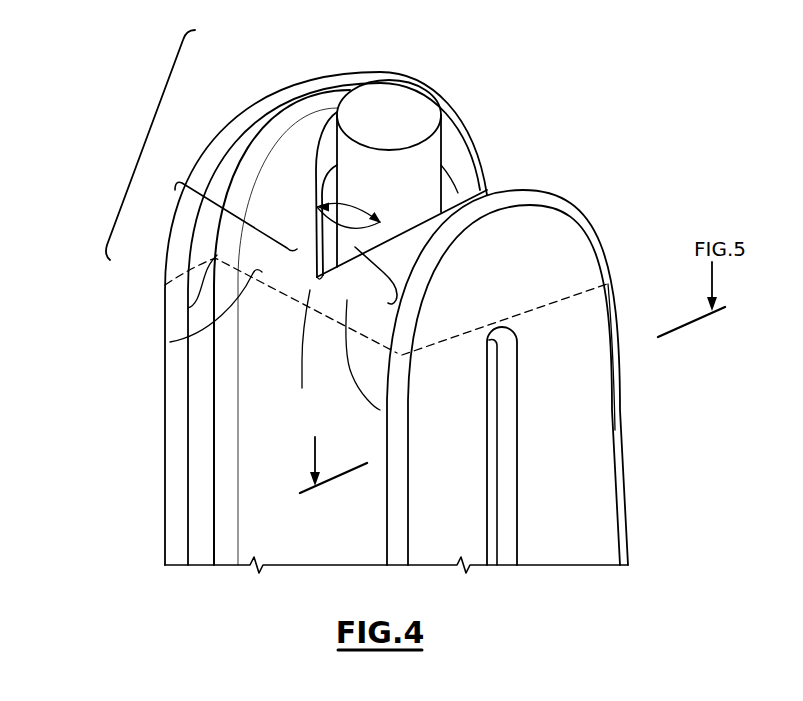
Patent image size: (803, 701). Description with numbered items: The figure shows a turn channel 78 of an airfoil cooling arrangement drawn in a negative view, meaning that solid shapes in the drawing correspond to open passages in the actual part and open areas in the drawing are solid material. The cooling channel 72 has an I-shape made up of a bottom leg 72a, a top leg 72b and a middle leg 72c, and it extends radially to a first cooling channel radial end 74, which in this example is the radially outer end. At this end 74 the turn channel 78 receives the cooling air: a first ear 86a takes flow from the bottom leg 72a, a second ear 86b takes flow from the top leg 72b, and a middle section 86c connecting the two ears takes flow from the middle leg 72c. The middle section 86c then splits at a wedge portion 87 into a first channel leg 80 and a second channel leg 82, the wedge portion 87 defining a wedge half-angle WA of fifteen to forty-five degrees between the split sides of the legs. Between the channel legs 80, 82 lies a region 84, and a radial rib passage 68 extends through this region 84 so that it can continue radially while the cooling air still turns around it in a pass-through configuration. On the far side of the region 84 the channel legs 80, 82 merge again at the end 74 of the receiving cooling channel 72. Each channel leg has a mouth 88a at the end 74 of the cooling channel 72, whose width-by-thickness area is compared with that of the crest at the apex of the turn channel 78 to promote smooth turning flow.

The rib passage 68 is at (490, 373).
The cooling channel 72 is at (258, 473).
The bottom leg 72a is at (608, 499).
The top leg 72b is at (177, 458).
The middle leg 72c is at (273, 528).
The first cooling channel radial end 74 is at (170, 342).
The turn channel 78 is at (140, 142).
The first channel leg 80 is at (388, 275).
The second channel leg 82 is at (232, 222).
The region 84 is at (318, 160).
The first ear 86a is at (403, 322).
The second ear 86b is at (177, 247).
The middle section 86c is at (302, 388).
The wedge portion 87 is at (328, 292).
The mouth 88a is at (188, 308).
The wedge half-angle WA is at (380, 222).